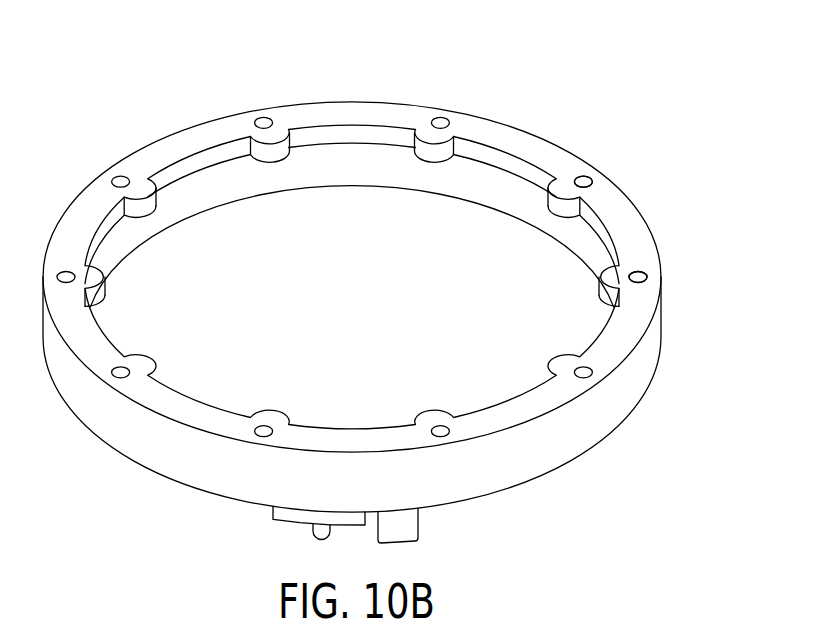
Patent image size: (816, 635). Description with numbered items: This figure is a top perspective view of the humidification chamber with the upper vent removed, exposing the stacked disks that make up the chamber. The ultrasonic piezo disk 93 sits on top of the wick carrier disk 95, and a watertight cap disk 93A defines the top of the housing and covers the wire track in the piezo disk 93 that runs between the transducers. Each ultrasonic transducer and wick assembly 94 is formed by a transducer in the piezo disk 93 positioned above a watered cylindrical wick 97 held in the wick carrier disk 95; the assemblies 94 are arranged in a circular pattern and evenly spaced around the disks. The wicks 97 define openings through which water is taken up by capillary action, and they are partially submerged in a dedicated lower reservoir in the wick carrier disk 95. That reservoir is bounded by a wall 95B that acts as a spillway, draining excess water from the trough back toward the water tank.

The ultrasonic piezo disk 93 is at (400, 314).
The cap disk 93A is at (500, 420).
The ultrasonic transducer and wick assembly 94 is at (436, 116).
The wick carrier disk 95 is at (400, 277).
The wall 95B is at (627, 390).
The watered cylindrical wicks 97 is at (592, 182).